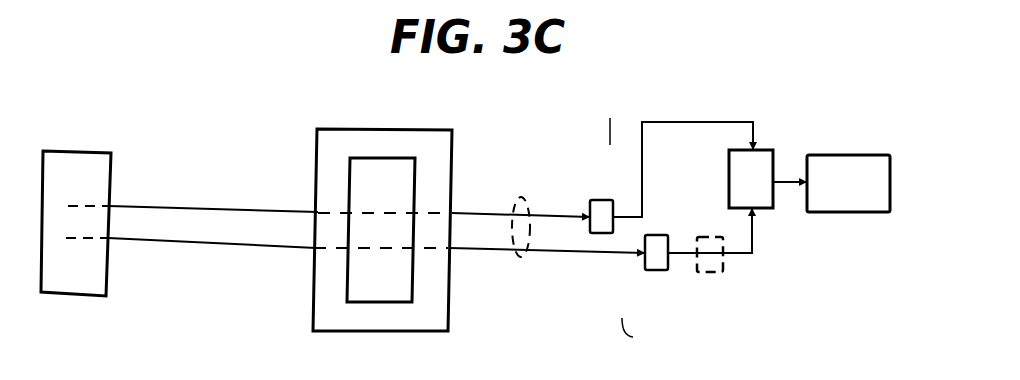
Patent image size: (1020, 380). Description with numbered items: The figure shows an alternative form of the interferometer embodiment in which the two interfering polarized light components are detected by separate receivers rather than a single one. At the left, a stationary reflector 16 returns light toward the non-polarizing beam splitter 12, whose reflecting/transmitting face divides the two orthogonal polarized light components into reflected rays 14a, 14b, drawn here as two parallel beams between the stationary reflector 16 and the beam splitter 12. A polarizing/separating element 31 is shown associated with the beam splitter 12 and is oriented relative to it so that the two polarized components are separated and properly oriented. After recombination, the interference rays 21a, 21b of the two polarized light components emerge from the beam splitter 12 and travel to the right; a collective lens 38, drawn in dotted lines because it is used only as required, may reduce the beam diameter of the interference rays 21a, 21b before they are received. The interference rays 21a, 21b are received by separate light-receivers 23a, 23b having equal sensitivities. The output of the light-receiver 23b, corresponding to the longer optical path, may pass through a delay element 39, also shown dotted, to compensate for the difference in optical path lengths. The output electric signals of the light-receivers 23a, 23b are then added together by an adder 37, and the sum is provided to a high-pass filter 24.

The stationary reflector 16 is at (89, 149).
The reflected ray 14a is at (205, 208).
The reflected ray 14b is at (205, 244).
The non-polarizing beam splitter 12 is at (420, 129).
The polarizing/separating element 31 is at (415, 175).
The collective lens 38 is at (522, 260).
The interference ray 21a is at (558, 212).
The interference ray 21b is at (556, 253).
The light-receiver 23a is at (600, 199).
The light-receiver 23b is at (653, 272).
The delay element 39 is at (705, 273).
The adder 37 is at (762, 150).
The high-pass filter 24 is at (887, 142).